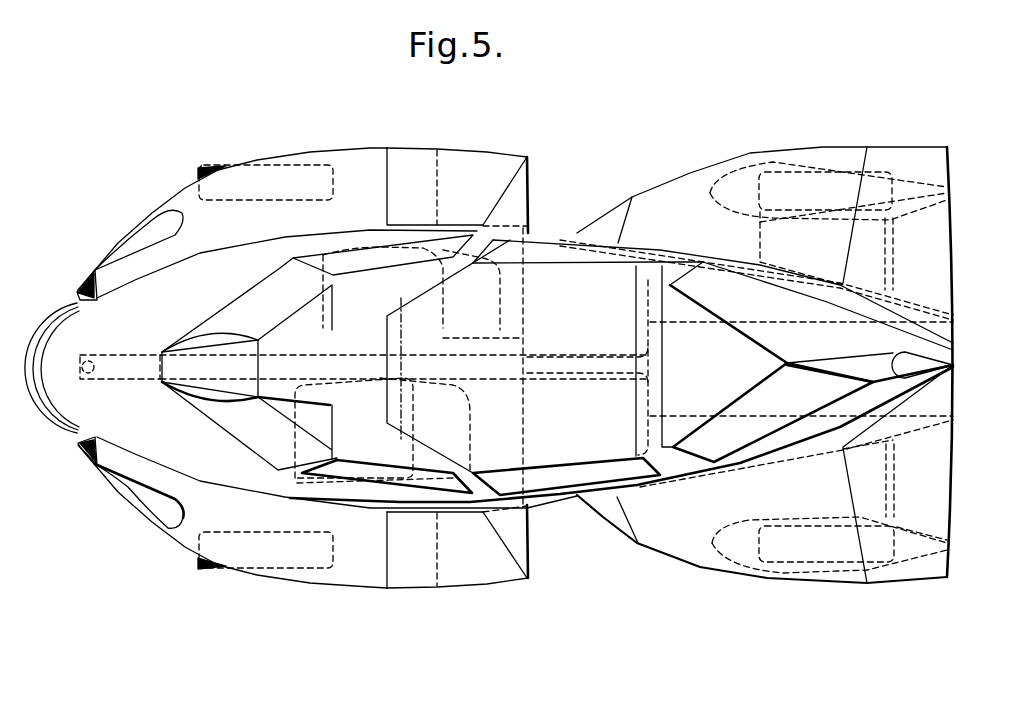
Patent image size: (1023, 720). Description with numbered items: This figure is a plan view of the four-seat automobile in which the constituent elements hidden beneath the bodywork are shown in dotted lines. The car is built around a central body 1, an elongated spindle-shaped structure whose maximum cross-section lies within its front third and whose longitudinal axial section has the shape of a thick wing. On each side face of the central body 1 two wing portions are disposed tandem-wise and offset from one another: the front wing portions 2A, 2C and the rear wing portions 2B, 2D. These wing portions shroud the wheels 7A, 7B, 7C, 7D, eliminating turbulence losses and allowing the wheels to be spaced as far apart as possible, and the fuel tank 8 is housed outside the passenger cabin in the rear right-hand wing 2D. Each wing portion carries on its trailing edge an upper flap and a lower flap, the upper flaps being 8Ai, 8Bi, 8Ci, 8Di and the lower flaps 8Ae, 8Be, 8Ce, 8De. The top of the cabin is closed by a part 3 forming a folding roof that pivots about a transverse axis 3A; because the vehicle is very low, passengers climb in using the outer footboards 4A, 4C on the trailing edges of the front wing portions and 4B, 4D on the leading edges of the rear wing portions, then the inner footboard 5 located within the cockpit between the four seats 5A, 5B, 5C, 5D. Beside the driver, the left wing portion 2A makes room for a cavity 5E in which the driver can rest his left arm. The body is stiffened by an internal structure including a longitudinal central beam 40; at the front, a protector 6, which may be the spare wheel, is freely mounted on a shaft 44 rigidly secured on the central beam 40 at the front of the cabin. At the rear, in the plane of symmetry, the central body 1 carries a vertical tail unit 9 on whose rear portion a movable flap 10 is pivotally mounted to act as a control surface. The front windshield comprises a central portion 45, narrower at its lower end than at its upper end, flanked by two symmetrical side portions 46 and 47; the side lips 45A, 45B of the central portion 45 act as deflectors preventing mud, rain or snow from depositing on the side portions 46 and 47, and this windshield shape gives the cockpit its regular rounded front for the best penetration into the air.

The central body 1 is at (112, 420).
The front left wing portion 2A is at (183, 538).
The rear left wing portion 2B is at (690, 552).
The front right wing portion 2C is at (182, 203).
The rear right-hand wing portion 2D is at (690, 190).
The folding roof part 3 is at (518, 275).
The transverse axis 3A is at (401, 300).
The outer footboard 4A is at (525, 570).
The outer footboard 4B is at (602, 511).
The outer footboard 4C is at (520, 182).
The outer footboard 4D is at (607, 228).
The inner footboard 5 is at (490, 355).
The seat 5A is at (366, 485).
The seat 5B is at (620, 418).
The seat 5C is at (350, 278).
The seat 5D is at (603, 280).
The cavity 5E is at (320, 530).
The protector 6 is at (38, 376).
The wheel 7A is at (210, 568).
The wheel 7B is at (800, 562).
The wheel 7C is at (208, 168).
The wheel 7D is at (812, 180).
The fuel tank 8 is at (762, 236).
The upper flap 8Ai is at (413, 577).
The lower flap 8Ae is at (467, 573).
The upper flap 8Bi is at (902, 577).
The lower flap 8Be is at (935, 495).
The upper flap 8Ci is at (410, 163).
The lower flap 8Ce is at (468, 165).
The upper flap 8Di is at (907, 162).
The lower flap 8De is at (940, 248).
The vertical tail unit 9 is at (840, 363).
The movable flap 10 is at (935, 363).
The longitudinal central beam 40 is at (580, 360).
The shaft 44 is at (97, 365).
The central portion of windshield 45 is at (195, 385).
The side lip 45A is at (235, 400).
The side lip 45B is at (232, 340).
The side portion of windshield 46 is at (225, 415).
The side portion of windshield 47 is at (215, 318).